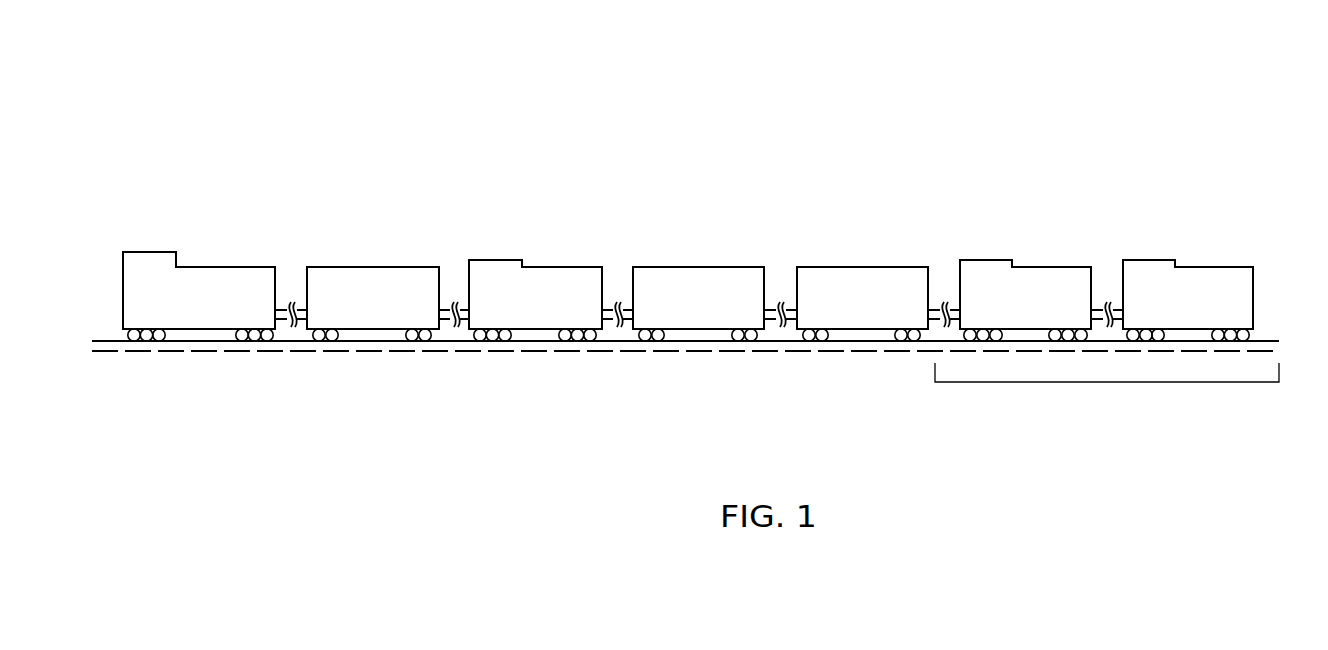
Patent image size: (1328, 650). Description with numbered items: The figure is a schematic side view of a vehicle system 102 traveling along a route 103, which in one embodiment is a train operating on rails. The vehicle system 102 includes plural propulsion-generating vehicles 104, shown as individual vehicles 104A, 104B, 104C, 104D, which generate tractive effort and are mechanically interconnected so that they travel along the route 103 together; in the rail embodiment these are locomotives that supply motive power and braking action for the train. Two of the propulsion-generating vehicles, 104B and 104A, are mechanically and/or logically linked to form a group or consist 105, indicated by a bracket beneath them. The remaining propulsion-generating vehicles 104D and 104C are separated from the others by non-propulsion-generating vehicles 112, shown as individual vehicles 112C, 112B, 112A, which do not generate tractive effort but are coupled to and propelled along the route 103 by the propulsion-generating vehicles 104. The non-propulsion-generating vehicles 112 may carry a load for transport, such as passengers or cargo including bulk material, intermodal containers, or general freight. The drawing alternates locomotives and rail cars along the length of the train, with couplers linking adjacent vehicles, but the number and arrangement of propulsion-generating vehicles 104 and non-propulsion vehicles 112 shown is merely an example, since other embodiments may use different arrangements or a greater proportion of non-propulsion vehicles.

The vehicle system 102 is at (1110, 80).
The route 103 is at (693, 342).
The propulsion-generating vehicles 104 is at (551, 260).
The propulsion-generating vehicle 104A is at (1205, 267).
The propulsion-generating vehicle 104B is at (1050, 267).
The propulsion-generating vehicle 104C is at (538, 267).
The propulsion-generating vehicle 104D is at (223, 267).
The consist 105 is at (1108, 382).
The non-propulsion-generating vehicles 112 is at (364, 260).
The non-propulsion-generating vehicle 112A is at (825, 267).
The non-propulsion-generating vehicle 112B is at (713, 267).
The non-propulsion-generating vehicle 112C is at (343, 267).